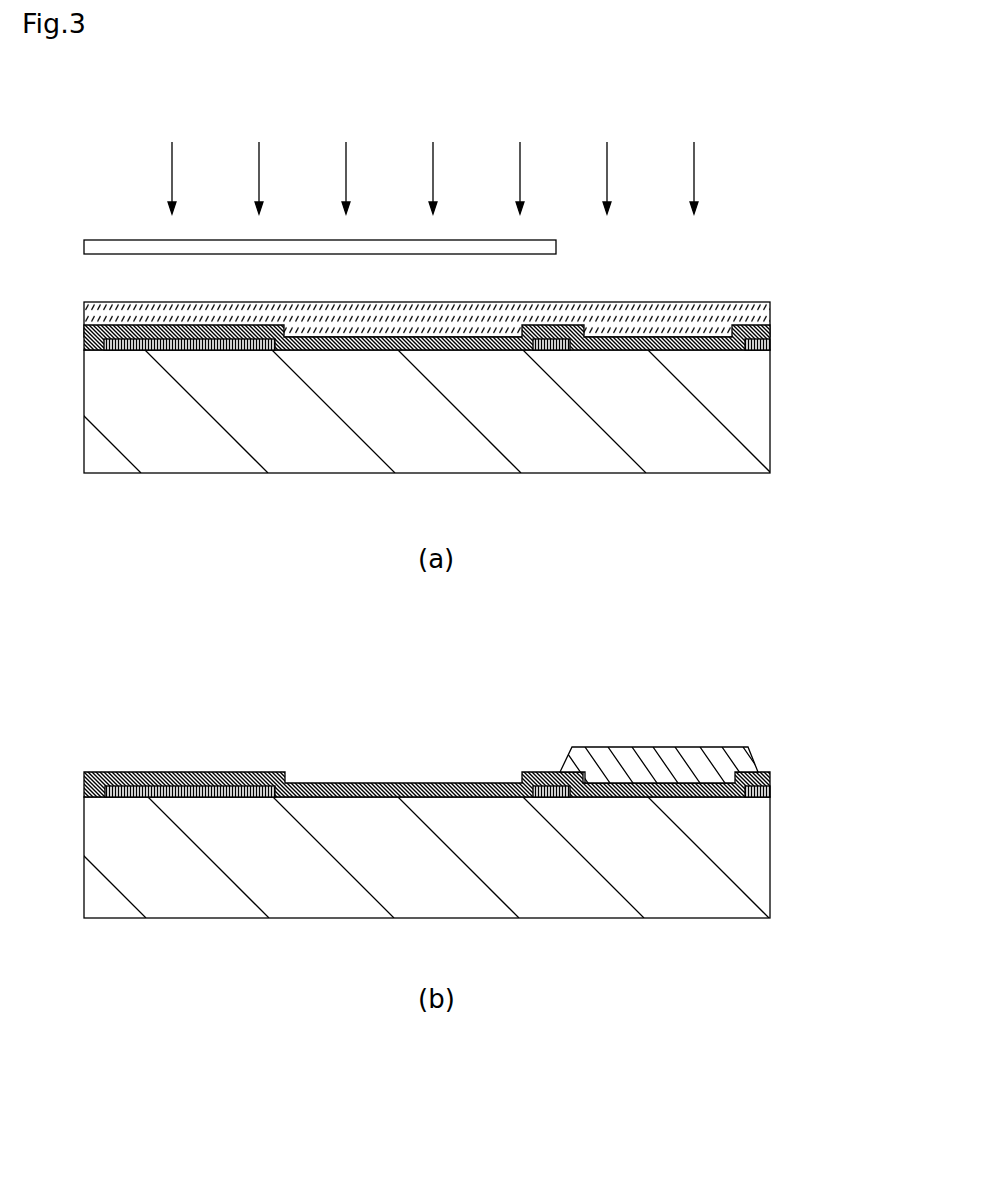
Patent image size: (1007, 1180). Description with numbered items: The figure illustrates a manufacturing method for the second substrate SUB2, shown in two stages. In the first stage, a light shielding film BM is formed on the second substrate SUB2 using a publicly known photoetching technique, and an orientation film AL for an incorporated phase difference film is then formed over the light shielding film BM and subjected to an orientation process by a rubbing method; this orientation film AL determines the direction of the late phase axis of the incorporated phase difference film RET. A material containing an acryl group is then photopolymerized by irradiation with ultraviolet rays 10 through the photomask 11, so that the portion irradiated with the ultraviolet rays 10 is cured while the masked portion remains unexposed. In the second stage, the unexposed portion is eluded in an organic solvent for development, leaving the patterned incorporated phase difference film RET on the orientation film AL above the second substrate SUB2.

The ultraviolet rays 10 is at (433, 162).
The photomask 11 is at (146, 240).
The light shielding film BM is at (186, 346).
The orientation film AL is at (672, 346).
The second substrate SUB2 is at (748, 392).
The incorporated phase difference film RET is at (662, 764).